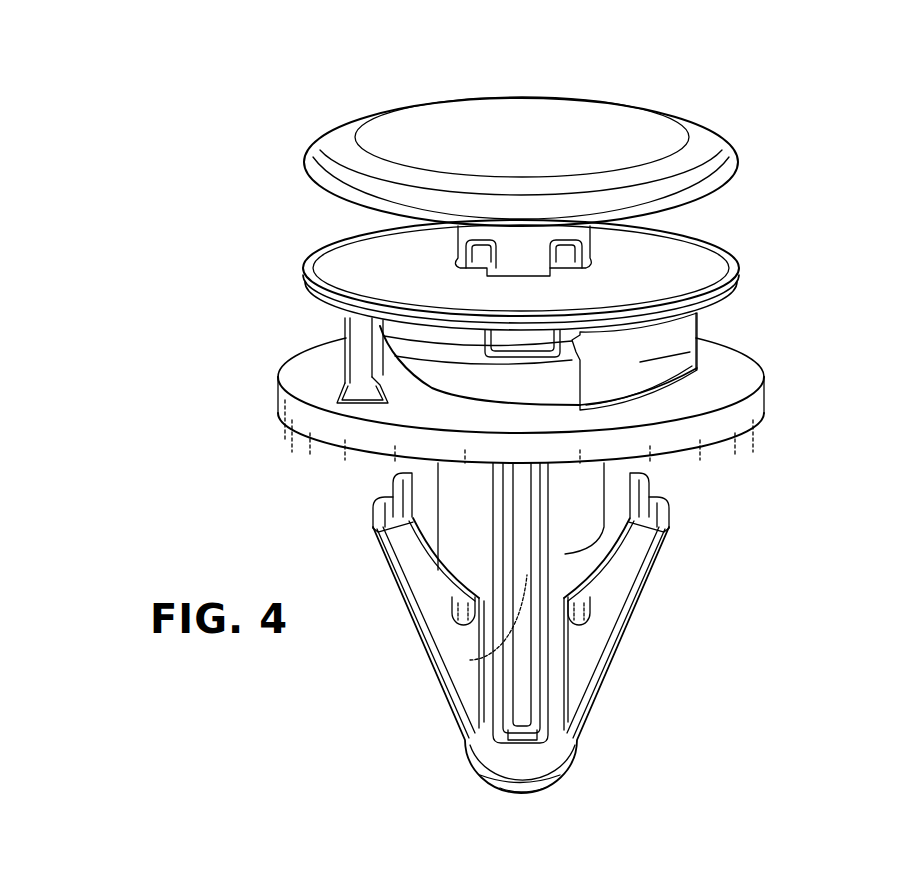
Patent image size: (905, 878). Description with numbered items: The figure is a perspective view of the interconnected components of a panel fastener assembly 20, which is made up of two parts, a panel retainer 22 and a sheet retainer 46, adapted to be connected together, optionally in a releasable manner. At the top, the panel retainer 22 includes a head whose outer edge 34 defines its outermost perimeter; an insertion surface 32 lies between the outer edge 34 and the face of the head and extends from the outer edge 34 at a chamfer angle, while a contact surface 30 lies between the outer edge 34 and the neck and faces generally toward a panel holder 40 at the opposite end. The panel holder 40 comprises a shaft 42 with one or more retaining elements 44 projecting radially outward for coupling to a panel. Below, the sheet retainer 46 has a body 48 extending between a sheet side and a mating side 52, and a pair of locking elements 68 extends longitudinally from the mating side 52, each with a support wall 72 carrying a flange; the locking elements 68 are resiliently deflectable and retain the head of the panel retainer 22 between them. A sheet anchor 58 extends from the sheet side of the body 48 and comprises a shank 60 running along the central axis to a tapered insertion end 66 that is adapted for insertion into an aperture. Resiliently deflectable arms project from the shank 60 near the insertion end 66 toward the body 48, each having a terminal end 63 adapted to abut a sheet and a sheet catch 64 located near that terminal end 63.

The panel fastener assembly 20 is at (128, 380).
The panel retainer 22 is at (781, 120).
The contact surface 30 is at (432, 338).
The insertion surface 32 is at (430, 380).
The outer edge 34 is at (342, 373).
The panel holder 40 is at (516, 118).
The shaft 42 is at (548, 233).
The retaining element 44 is at (337, 260).
The sheet retainer 46 is at (678, 660).
The body 48 is at (765, 407).
The mating side 52 is at (745, 387).
The sheet anchor 58 is at (557, 748).
The shank 60 is at (527, 578).
The terminal end 63 is at (635, 478).
The sheet catch 64 is at (665, 510).
The insertion end 66 is at (523, 797).
The locking element 68 is at (340, 325).
The support wall 72 is at (645, 367).